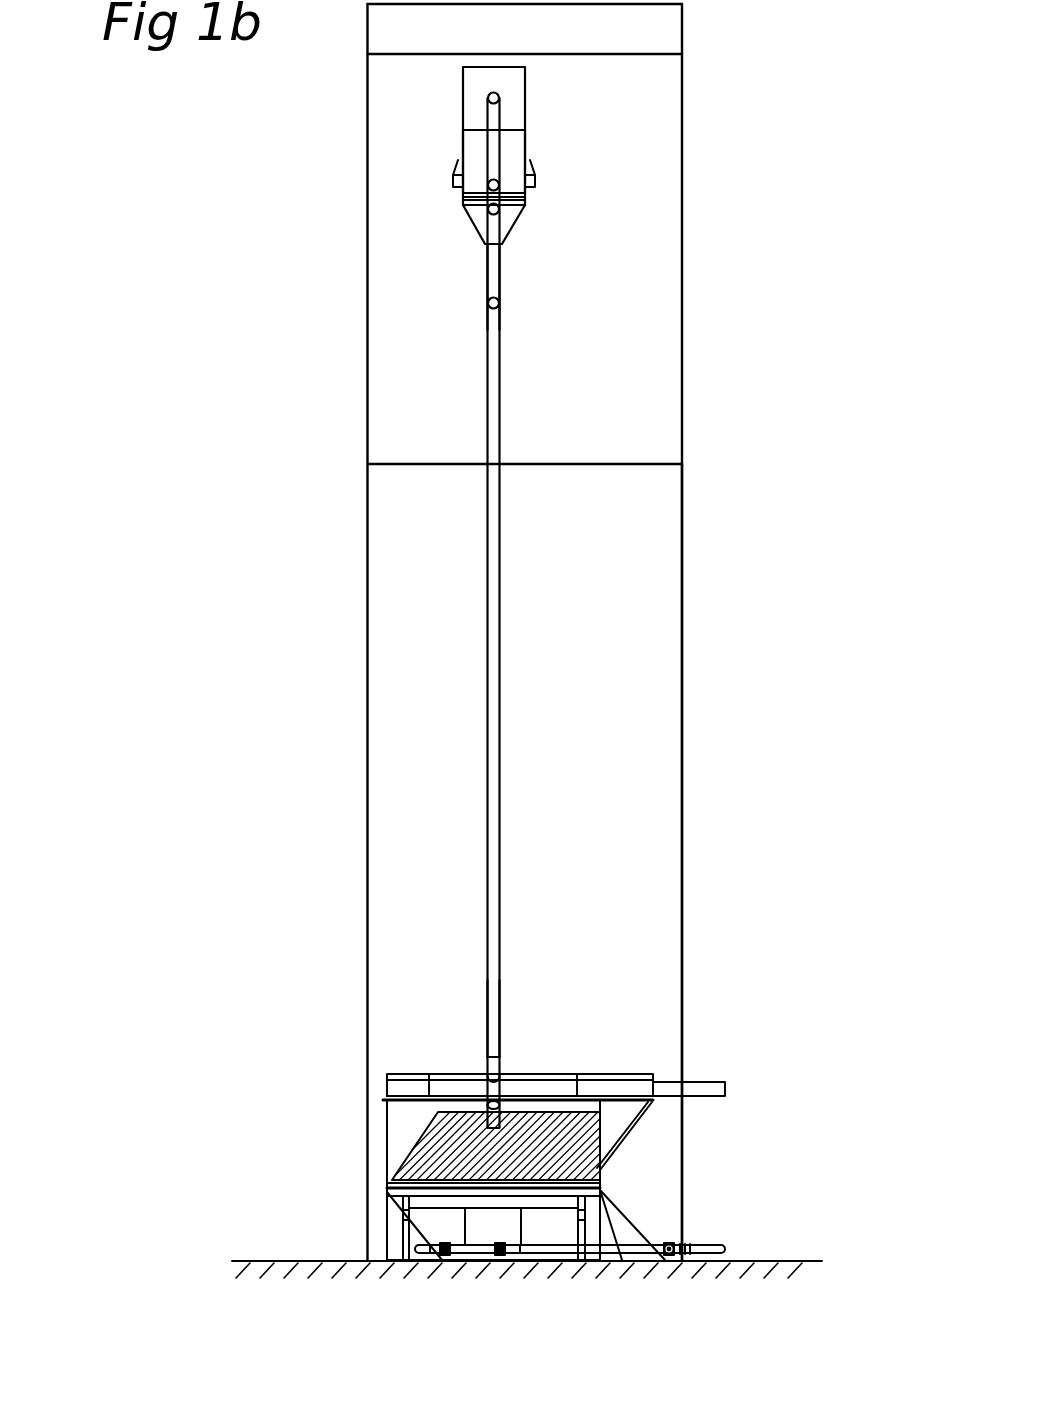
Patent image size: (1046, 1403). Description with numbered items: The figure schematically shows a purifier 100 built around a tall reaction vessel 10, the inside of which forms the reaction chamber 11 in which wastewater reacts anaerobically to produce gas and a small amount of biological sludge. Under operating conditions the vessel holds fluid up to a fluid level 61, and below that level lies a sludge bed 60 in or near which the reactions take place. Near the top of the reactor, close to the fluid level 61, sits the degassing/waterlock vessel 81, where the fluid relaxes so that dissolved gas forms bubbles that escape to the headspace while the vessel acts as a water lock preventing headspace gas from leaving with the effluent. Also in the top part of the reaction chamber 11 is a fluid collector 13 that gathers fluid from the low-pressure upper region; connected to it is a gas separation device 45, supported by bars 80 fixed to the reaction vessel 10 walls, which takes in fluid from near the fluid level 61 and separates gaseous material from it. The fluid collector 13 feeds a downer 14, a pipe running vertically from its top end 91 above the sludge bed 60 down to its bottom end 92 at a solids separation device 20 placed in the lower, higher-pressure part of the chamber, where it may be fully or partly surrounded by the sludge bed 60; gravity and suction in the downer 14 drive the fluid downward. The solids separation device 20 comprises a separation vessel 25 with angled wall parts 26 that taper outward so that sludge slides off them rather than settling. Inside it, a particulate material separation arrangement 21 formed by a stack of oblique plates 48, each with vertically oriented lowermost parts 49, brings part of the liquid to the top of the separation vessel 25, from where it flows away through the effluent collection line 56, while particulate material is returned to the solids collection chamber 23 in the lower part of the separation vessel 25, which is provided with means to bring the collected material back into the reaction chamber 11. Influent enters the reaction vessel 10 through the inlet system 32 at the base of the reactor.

The purifier 100 is at (303, 288).
The reaction vessel 10 is at (682, 316).
The reaction chamber 11 is at (658, 665).
The fluid level 61 is at (633, 54).
The sludge bed 60 is at (652, 464).
The degassing/waterlock vessel 81 is at (518, 95).
The gas separation device 45 is at (513, 146).
The bars 80 is at (453, 175).
The fluid collector 13 is at (512, 232).
The downer 14 is at (500, 788).
The top end 91 is at (493, 269).
The bottom end 92 is at (495, 1013).
The effluent collection line 56 is at (667, 1087).
The solids separation device 20 is at (386, 1122).
The oblique plates 48 is at (413, 1166).
The vertically oriented lowermost parts 49 is at (387, 1183).
The particulate material separation arrangement 21 is at (555, 1130).
The separation vessel 25 is at (605, 1160).
The angled wall parts 26 is at (627, 1217).
The solids collection chamber 23 is at (552, 1225).
The inlet system 32 is at (659, 1281).